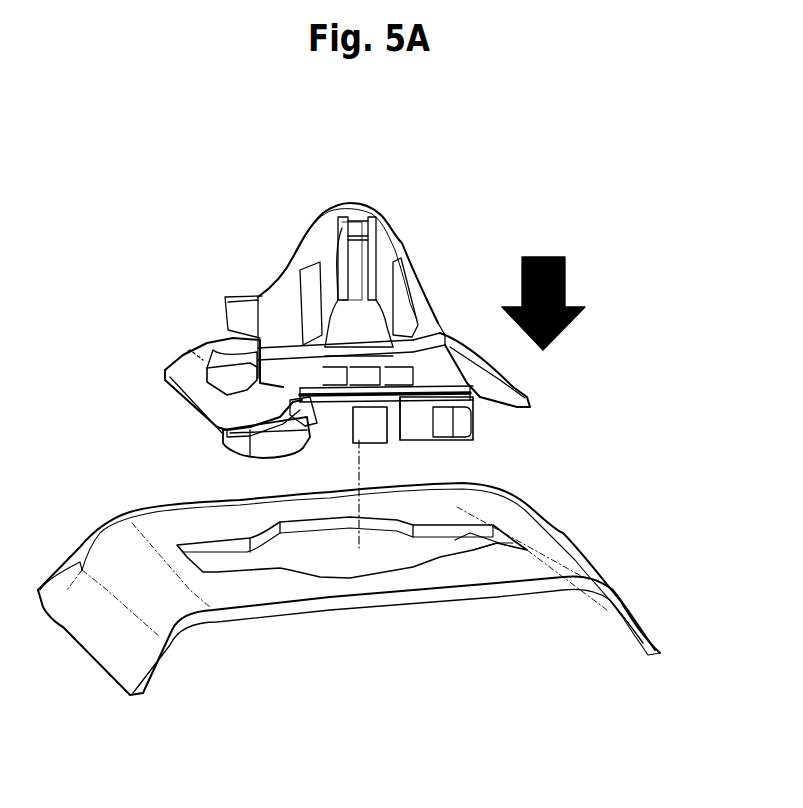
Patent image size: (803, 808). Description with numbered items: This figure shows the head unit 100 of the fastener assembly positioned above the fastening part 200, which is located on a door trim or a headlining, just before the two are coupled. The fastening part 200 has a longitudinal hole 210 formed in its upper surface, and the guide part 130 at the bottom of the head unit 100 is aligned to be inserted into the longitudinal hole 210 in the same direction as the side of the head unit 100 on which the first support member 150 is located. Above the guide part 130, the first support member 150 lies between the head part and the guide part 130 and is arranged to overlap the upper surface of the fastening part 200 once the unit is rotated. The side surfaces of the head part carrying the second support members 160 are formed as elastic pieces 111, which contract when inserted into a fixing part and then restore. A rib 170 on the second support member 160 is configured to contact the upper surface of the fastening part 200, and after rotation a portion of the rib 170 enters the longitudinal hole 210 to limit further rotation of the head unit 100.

The head unit 100 is at (260, 180).
The elastic pieces 111 is at (376, 318).
The guide part 130 is at (230, 465).
The first support member 150 is at (193, 387).
The second support member 160 is at (467, 400).
The rib 170 is at (373, 423).
The fastening part 200 is at (520, 570).
The longitudinal hole 210 is at (470, 533).